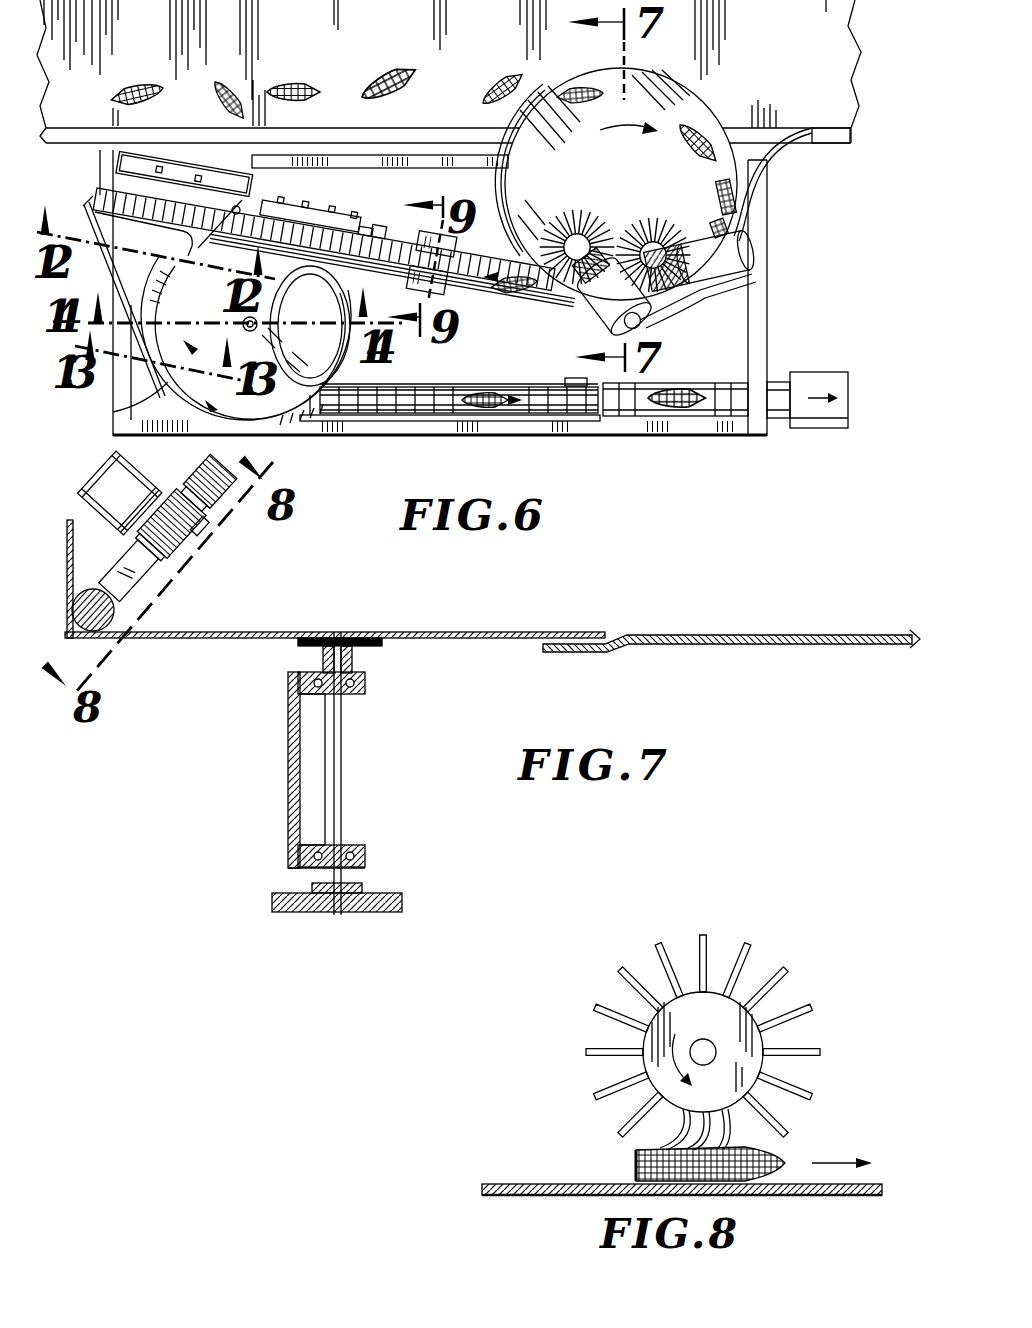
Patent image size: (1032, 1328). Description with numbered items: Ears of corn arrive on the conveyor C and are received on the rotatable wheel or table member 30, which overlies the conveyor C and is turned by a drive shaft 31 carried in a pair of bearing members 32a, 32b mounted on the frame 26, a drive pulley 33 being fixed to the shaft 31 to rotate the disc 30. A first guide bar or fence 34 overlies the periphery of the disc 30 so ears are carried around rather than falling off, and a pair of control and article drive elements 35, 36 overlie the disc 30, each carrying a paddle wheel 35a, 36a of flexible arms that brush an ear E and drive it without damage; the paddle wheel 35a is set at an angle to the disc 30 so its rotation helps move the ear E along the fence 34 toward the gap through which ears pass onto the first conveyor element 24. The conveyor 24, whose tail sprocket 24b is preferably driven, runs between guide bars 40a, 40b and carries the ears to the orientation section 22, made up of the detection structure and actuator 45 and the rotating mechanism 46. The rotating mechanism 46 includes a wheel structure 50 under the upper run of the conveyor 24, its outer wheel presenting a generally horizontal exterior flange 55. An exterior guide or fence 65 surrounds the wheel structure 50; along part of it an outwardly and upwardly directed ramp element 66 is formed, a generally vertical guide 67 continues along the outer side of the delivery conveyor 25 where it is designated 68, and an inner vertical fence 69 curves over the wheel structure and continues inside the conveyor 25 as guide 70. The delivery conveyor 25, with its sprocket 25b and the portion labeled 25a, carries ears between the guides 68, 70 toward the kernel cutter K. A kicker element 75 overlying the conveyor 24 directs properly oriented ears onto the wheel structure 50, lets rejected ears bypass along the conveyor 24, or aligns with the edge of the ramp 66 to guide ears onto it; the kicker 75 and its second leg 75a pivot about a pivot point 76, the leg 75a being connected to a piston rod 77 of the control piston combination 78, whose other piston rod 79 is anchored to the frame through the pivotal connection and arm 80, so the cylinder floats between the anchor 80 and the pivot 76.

In FIG. 6, the orientation section 22 is at (459, 384).
In FIG. 6, the first conveyor element 24 is at (556, 283).
In FIG. 6, the tail sprocket 24b is at (103, 193).
In FIG. 6, the delivery conveyor element 25 is at (540, 405).
In FIG. 6, the discharge conveyor section 25a is at (712, 418).
In FIG. 6, the sprocket 25b is at (582, 420).
In FIG. 7, the frame 26 is at (288, 718).
In FIG. 6, the rotatable wheel or table member 30 is at (702, 117).
In FIG. 7, the rotatable wheel or table member 30 is at (470, 633).
In FIG. 8, the rotatable wheel or table member 30 is at (520, 1183).
In FIG. 7, the drive shaft 31 is at (342, 782).
In FIG. 7, the bearing member 32a is at (366, 683).
In FIG. 7, the bearing member 32b is at (366, 857).
In FIG. 7, the drive pulley 33 is at (285, 912).
In FIG. 6, the first guide bar or fence 34 is at (507, 204).
In FIG. 7, the first guide bar or fence 34 is at (67, 540).
In FIG. 6, the control and article drive element 35 is at (727, 270).
In FIG. 7, the control and article drive element 35 is at (144, 478).
In FIG. 6, the paddle wheel 35a is at (655, 240).
In FIG. 7, the paddle wheel 35a is at (126, 582).
In FIG. 8, the paddle wheel 35a is at (745, 965).
In FIG. 6, the control and article drive element 36 is at (648, 320).
In FIG. 6, the paddle wheel 36a is at (575, 245).
In FIG. 6, the guide bar 40a is at (553, 283).
In FIG. 6, the guide bar 40b is at (540, 300).
In FIG. 6, the detection structure and actuator 45 is at (488, 214).
In FIG. 6, the rotating mechanism 46 is at (352, 192).
In FIG. 6, the wheel structure 50 is at (322, 309).
In FIG. 6, the horizontal exterior flange 55 is at (168, 303).
In FIG. 6, the exterior guide or fence 65 is at (129, 257).
In FIG. 6, the ramp element 66 is at (88, 205).
In FIG. 6, the vertical guide 67 is at (115, 410).
In FIG. 6, the exterior guide 68 is at (362, 428).
In FIG. 6, the inner vertical fence or guide 69 is at (288, 345).
In FIG. 6, the interior guide 70 is at (490, 388).
In FIG. 6, the kicker element 75 is at (210, 235).
In FIG. 6, the second leg 75a is at (236, 208).
In FIG. 6, the pivot point 76 is at (232, 205).
In FIG. 6, the piston rod 77 is at (258, 206).
In FIG. 6, the control piston combination 78 is at (310, 206).
In FIG. 6, the piston rod 79 is at (362, 215).
In FIG. 6, the pivotal connection and arm 80 is at (376, 230).
In FIG. 6, the conveyor C is at (802, 26).
In FIG. 7, the conveyor C is at (758, 648).
In FIG. 8, the ear E is at (632, 1157).
In FIG. 6, the kernel cutter K is at (818, 372).